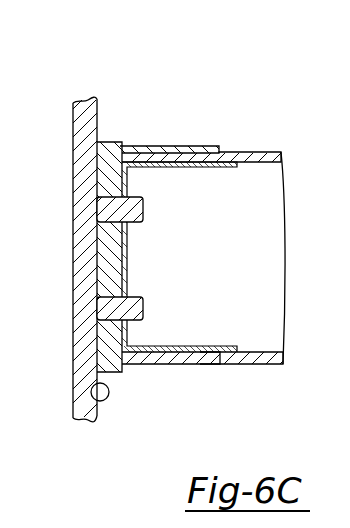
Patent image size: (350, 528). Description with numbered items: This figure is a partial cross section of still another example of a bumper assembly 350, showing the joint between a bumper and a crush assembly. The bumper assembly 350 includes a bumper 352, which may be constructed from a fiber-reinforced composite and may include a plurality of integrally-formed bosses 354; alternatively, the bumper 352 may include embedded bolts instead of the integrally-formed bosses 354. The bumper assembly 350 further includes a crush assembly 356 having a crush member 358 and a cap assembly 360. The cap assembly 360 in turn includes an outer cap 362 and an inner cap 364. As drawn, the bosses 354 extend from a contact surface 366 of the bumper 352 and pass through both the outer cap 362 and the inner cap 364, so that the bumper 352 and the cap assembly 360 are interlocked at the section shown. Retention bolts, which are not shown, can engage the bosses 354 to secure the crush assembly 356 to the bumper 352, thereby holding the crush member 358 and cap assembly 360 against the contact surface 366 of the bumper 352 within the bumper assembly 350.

The bumper assembly 350 is at (247, 78).
The bumper 352 is at (80, 129).
The integrally-formed bosses 354 is at (138, 205).
The crush assembly 356 is at (268, 153).
The crush member 358 is at (258, 363).
The cap assembly 360 is at (163, 146).
The outer cap 362 is at (159, 365).
The inner cap 364 is at (159, 346).
The contact surface 366 is at (97, 386).